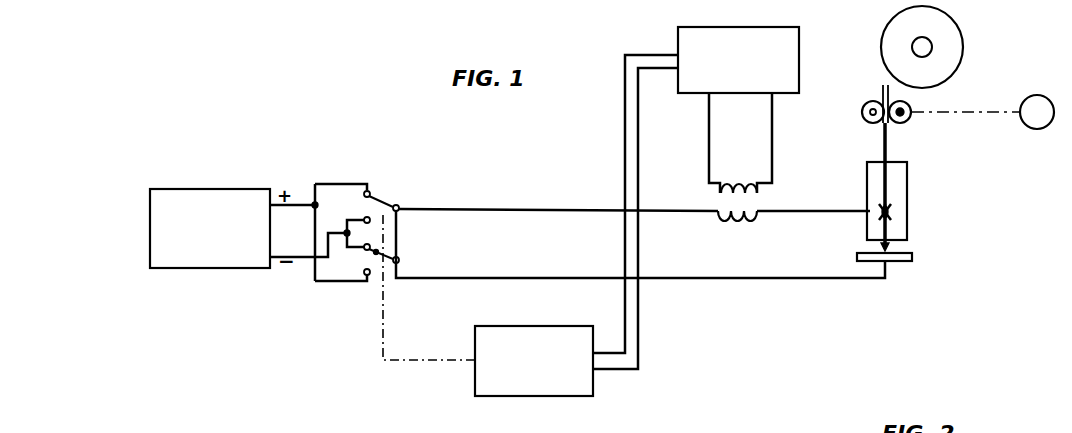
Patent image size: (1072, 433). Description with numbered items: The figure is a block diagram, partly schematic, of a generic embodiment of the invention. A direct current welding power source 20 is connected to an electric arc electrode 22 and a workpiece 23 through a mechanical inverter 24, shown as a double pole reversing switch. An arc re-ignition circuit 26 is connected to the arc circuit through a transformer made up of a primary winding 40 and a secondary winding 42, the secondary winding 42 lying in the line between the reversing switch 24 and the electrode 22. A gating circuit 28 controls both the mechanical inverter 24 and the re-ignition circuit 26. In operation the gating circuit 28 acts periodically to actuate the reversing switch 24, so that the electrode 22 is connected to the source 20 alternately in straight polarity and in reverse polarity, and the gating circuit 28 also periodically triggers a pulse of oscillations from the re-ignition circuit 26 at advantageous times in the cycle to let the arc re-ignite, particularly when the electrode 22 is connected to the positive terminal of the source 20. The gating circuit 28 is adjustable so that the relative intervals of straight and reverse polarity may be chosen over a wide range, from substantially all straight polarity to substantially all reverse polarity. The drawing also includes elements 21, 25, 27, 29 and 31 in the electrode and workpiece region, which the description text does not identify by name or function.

The direct current welding power source 20 is at (207, 268).
The welding torch 21 is at (907, 180).
The electric arc electrode 22 is at (889, 246).
The workpiece 23 is at (912, 258).
The mechanical inverter 24 is at (383, 244).
The welding arc 25 is at (878, 217).
The arc re-ignition circuit 26 is at (678, 35).
The wire feed rolls 27 is at (870, 100).
The gating circuit 28 is at (527, 397).
The feed motor 29 is at (1047, 95).
The wire reel 31 is at (957, 54).
The primary winding 40 is at (757, 185).
The secondary winding 42 is at (748, 222).